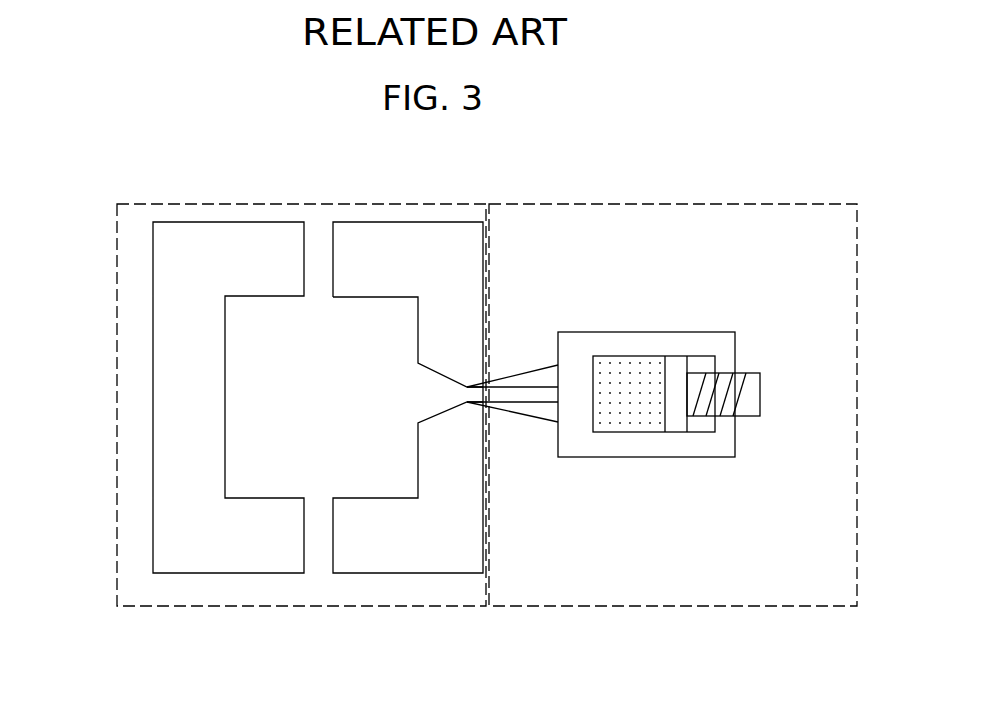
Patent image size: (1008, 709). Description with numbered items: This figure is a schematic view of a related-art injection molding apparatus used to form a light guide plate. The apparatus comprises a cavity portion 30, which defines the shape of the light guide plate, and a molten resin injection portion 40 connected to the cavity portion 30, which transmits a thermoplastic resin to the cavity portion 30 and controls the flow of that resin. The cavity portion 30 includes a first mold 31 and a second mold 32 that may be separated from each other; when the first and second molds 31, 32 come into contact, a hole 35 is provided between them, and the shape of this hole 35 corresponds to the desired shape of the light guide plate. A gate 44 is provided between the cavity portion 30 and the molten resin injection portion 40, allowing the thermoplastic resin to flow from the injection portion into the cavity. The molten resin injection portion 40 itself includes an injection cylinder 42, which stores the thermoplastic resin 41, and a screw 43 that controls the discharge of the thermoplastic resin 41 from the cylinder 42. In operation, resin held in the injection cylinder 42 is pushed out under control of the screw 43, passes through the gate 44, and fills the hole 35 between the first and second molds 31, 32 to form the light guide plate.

The cavity portion 30 is at (262, 606).
The first mold 31 is at (227, 228).
The second mold 32 is at (413, 228).
The hole 35 is at (240, 398).
The molten resin injection portion 40 is at (618, 606).
The thermoplastic resin 41 is at (630, 356).
The injection cylinder 42 is at (718, 332).
The screw 43 is at (748, 397).
The gate 44 is at (447, 403).